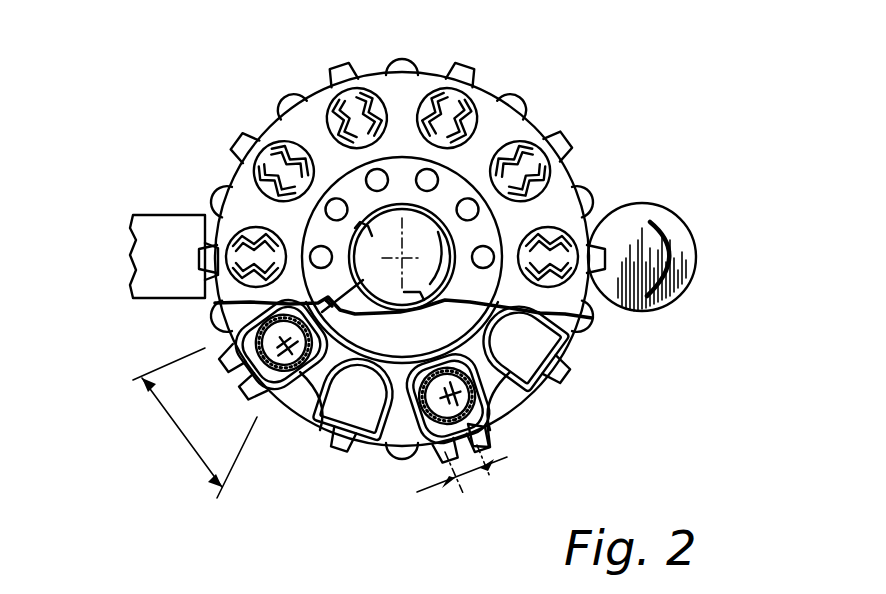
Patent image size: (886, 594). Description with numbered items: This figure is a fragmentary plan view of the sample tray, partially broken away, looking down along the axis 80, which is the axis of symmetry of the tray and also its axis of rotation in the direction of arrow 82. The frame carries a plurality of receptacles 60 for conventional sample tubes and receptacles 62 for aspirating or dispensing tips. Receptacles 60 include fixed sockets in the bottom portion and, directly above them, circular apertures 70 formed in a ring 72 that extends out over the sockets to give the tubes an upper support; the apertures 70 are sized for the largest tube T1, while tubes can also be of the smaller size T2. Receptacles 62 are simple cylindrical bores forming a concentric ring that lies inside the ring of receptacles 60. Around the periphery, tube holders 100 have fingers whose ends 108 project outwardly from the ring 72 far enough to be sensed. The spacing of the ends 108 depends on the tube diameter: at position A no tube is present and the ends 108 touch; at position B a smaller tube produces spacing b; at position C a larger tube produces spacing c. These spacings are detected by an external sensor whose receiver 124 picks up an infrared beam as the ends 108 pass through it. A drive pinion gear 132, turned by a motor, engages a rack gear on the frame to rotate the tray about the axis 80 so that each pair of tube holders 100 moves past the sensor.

The receptacles 60 is at (248, 345).
The receptacles 62 is at (431, 179).
The circular apertures 70 is at (357, 118).
The ring 72 is at (562, 172).
The axis 80 is at (387, 262).
The arrow of rotation 82 is at (416, 295).
The tube holder 100 is at (333, 455).
The ends 108 is at (262, 128).
The receiver 124 is at (134, 240).
The drive pinion gear 132 is at (692, 233).
The position A is at (567, 373).
The position B is at (500, 442).
The position C is at (350, 288).
The larger tube T1 is at (258, 385).
The smaller tube T2 is at (493, 438).
The spacing c is at (195, 423).
The spacing b is at (476, 465).